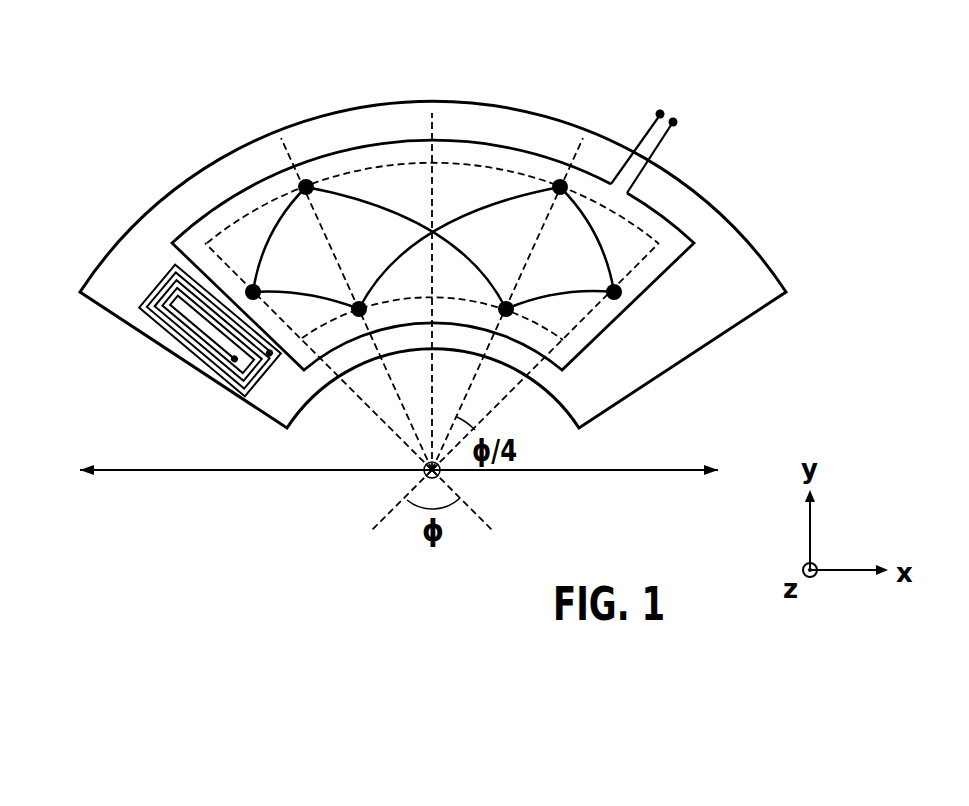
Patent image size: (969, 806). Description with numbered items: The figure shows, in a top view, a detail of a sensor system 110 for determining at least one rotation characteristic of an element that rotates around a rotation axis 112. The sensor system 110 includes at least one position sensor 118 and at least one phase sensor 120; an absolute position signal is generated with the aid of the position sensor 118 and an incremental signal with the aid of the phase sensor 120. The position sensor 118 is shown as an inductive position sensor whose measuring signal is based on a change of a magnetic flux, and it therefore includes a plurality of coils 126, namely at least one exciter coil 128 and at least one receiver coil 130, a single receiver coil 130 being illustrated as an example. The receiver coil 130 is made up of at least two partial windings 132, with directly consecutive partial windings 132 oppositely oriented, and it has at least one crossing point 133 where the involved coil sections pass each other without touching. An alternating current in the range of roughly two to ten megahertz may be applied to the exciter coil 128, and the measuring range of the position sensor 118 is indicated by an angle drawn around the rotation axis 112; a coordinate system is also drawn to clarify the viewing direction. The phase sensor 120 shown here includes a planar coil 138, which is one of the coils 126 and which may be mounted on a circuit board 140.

The sensor system 110 is at (240, 94).
The rotation axis 112 is at (443, 476).
The position sensor 118 is at (530, 136).
The phase sensor 120 is at (144, 335).
The coil 126 is at (437, 287).
The exciter coil 128 is at (677, 222).
The receiver coil 130 is at (558, 297).
The partial winding 132 is at (474, 199).
The crossing point 133 is at (433, 232).
The planar coil 138 is at (165, 292).
The circuit board 140 is at (266, 383).